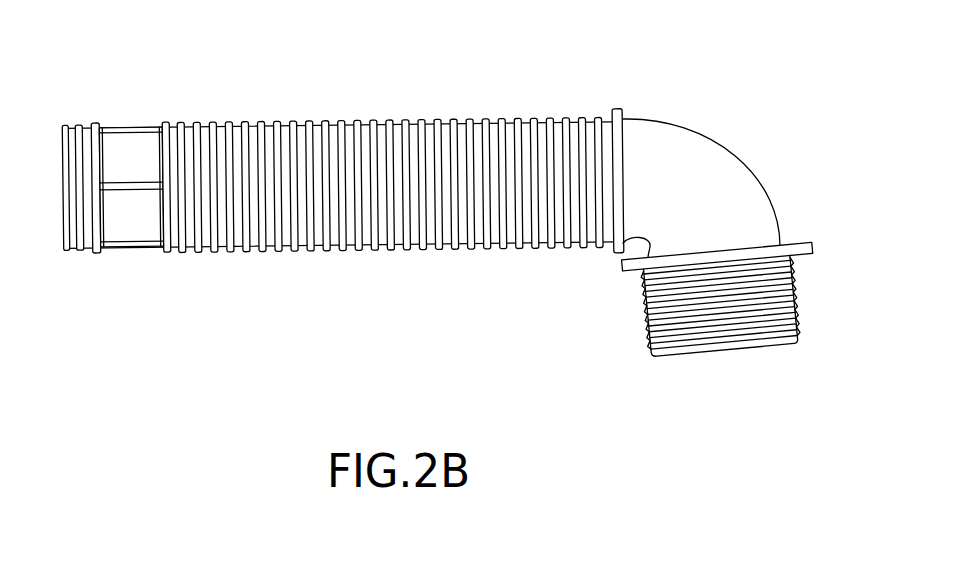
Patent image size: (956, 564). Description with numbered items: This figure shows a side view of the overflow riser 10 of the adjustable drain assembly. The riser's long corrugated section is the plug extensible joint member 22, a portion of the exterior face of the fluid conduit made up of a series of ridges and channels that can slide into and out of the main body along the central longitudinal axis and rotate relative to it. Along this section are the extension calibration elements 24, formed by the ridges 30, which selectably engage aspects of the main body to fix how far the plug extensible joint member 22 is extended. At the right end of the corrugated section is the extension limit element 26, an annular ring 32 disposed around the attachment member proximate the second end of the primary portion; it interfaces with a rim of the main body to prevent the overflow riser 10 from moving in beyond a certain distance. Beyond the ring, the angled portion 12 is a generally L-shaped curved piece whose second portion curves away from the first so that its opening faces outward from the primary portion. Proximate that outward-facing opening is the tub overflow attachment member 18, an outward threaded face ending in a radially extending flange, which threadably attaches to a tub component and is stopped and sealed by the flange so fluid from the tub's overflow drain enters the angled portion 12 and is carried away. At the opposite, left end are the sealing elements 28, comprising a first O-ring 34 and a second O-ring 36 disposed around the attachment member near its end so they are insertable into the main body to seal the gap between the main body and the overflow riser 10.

The overflow riser 10 is at (436, 199).
The angled portion 12 is at (713, 140).
The tub overflow attachment member 18 is at (629, 319).
The plug extensible joint member 22 is at (322, 195).
The extension calibration elements 24 is at (448, 318).
The extension limit element 26 is at (649, 148).
The sealing elements 28 is at (97, 242).
The ridges 30 is at (274, 216).
The annular ring 32 is at (618, 109).
The first O-ring 34 is at (66, 251).
The second O-ring 36 is at (79, 251).